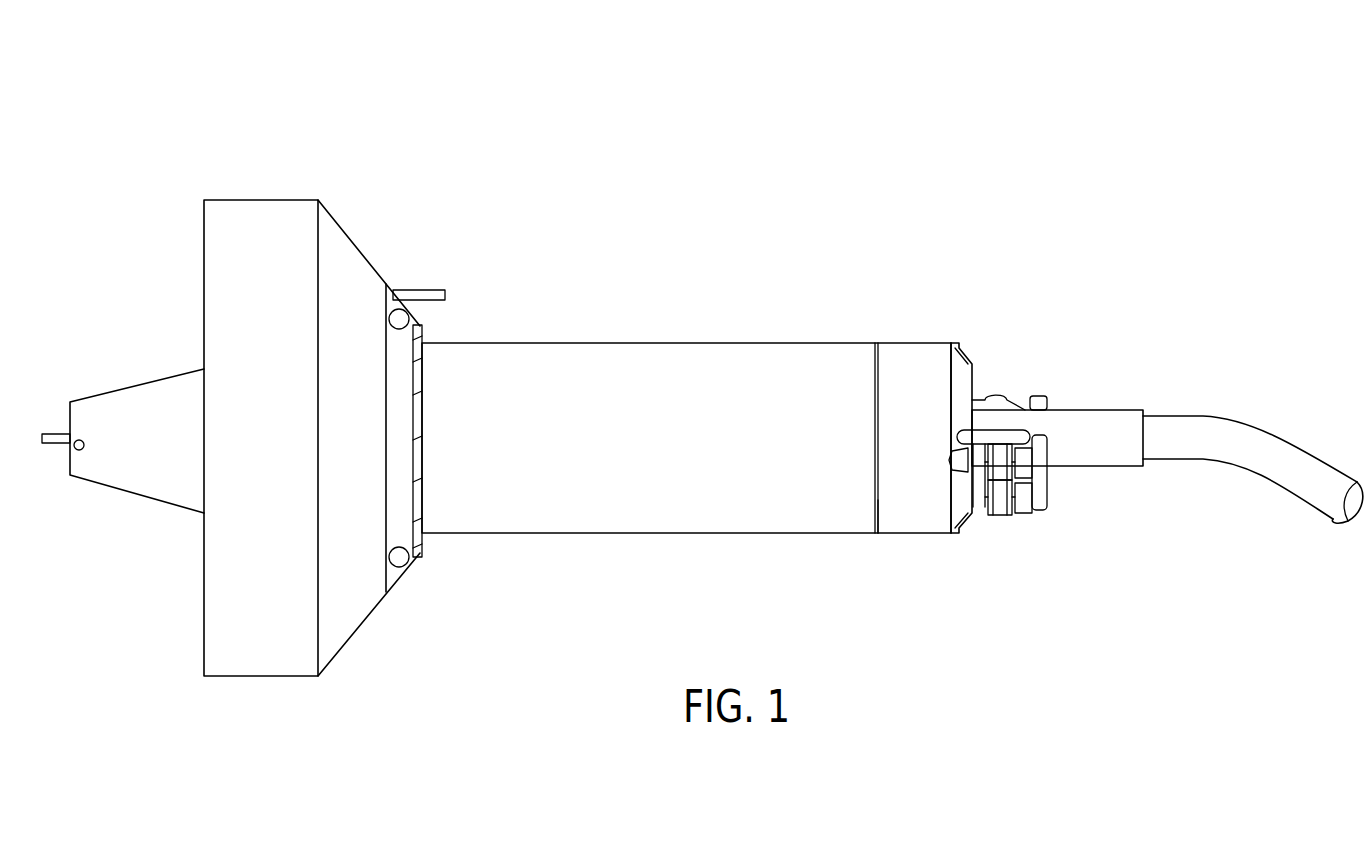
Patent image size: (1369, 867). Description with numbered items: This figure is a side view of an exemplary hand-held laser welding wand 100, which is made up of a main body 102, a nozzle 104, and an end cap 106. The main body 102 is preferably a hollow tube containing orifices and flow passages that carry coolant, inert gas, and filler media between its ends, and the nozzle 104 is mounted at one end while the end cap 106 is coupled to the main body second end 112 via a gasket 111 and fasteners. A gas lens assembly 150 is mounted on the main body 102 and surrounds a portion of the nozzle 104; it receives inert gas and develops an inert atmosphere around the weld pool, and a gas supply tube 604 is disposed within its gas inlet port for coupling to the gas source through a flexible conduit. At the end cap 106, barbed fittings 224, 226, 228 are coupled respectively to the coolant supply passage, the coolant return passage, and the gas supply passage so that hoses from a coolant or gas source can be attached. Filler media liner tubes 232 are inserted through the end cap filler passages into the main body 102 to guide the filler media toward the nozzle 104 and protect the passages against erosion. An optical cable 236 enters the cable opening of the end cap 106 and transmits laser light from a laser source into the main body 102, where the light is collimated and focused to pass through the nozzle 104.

The hand-held laser welding wand 100 is at (1094, 160).
The gas lens assembly 150 is at (349, 209).
The nozzle 104 is at (124, 388).
The gas supply tube 604 is at (425, 289).
The main body 102 is at (572, 344).
The second end 112 is at (875, 343).
The gasket 111 is at (882, 522).
The end cap 106 is at (923, 345).
The filler media liner tubes 232 is at (1000, 438).
The barbed fitting 224 is at (1038, 398).
The barbed fitting 226 is at (1049, 448).
The barbed fitting 228 is at (1049, 485).
The optical cable 236 is at (1210, 422).